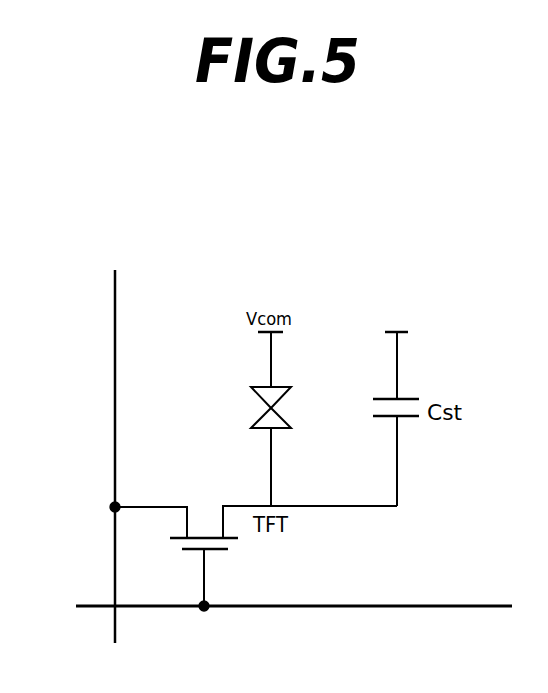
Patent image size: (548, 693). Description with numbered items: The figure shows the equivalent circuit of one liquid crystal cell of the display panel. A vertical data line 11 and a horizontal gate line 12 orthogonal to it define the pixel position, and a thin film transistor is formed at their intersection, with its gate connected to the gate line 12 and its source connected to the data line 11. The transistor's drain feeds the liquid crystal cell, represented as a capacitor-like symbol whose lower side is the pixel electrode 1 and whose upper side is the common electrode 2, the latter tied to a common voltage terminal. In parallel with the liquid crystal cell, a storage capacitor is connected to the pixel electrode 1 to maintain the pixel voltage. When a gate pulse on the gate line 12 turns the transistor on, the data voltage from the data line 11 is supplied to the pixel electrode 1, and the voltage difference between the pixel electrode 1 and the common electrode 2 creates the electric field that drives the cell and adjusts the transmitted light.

The data line 11 is at (113, 351).
The gate line 12 is at (405, 607).
The pixel electrode 1 is at (266, 413).
The common electrode 2 is at (266, 386).